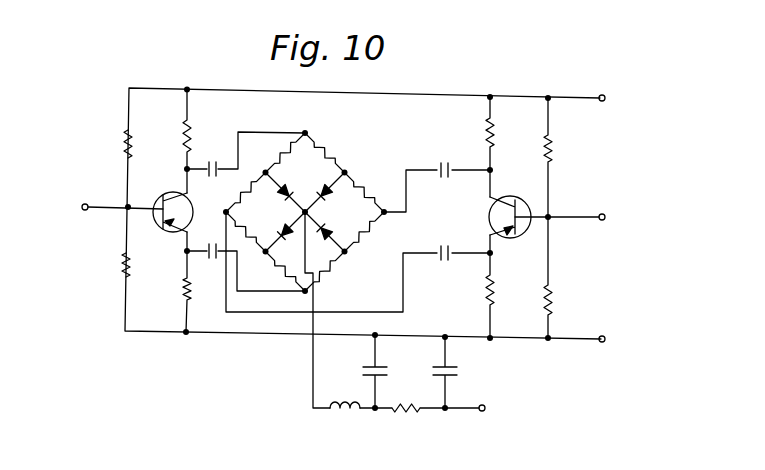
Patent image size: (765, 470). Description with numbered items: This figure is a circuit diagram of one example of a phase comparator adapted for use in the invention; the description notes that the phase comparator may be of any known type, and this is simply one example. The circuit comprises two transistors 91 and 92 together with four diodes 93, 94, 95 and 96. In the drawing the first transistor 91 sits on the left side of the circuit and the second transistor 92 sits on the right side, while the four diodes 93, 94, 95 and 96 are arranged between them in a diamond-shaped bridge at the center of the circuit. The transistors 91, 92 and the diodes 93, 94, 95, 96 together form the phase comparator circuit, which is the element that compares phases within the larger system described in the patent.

The transistor 91 is at (170, 231).
The transistor 92 is at (508, 238).
The diode 93 is at (285, 237).
The diode 94 is at (330, 233).
The diode 95 is at (324, 188).
The diode 96 is at (289, 196).